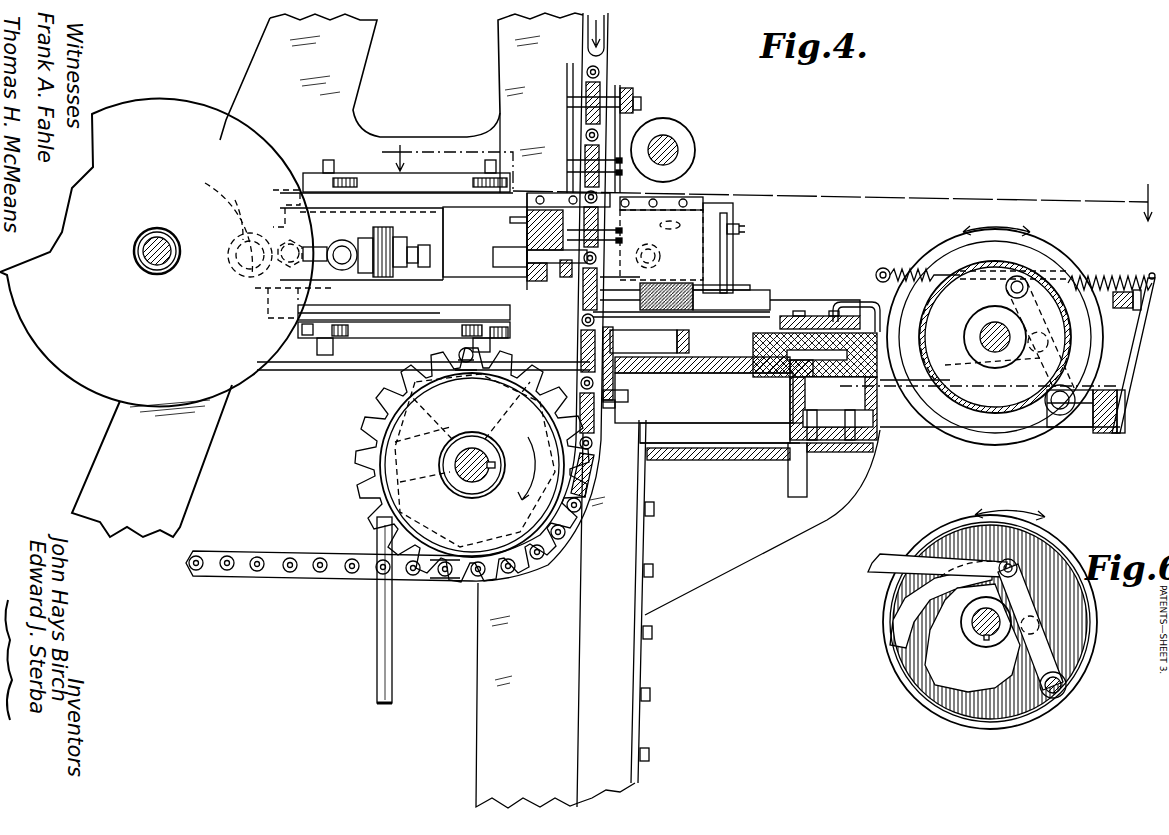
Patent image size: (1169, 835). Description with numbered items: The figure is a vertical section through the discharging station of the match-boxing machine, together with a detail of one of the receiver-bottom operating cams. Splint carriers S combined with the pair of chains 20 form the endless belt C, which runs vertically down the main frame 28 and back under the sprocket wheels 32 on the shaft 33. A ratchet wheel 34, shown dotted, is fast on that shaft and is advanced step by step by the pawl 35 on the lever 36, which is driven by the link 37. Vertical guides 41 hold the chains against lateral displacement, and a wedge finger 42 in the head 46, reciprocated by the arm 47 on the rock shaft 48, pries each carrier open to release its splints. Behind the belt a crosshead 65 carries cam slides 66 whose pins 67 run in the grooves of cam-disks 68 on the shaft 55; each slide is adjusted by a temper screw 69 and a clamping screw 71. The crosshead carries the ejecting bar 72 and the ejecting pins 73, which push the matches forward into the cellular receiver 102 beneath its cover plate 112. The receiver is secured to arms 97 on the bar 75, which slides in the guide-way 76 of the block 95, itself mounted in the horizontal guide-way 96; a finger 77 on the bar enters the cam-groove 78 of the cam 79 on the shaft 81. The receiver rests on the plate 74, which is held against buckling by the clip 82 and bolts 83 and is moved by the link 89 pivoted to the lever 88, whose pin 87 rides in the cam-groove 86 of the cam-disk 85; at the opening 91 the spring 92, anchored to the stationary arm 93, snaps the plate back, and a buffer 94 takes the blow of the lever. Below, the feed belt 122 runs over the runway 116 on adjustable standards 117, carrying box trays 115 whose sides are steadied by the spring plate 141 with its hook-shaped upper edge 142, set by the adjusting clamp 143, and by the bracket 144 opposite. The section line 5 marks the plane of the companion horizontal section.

In FIG. 4, the section line 5— 5 is at (647, 97).
In FIG. 4, the chains 20 is at (337, 571).
In FIG. 4, the main frame 28 is at (345, 63).
In FIG. 4, the sprocket wheels 32 is at (366, 490).
In FIG. 4, the shaft 33 is at (470, 477).
In FIG. 4, the ratchet wheel 34 is at (462, 560).
In FIG. 4, the pawl 35 is at (498, 356).
In FIG. 4, the lever 36 is at (388, 408).
In FIG. 4, the link 37 is at (378, 636).
In FIG. 4, the guides 41 is at (570, 83).
In FIG. 4, the wedge finger 42 is at (713, 198).
In FIG. 4, the head 46 is at (740, 193).
In FIG. 4, the arm 47 is at (690, 178).
In FIG. 4, the rock shaft 48 is at (668, 140).
In FIG. 4, the shaft 55 is at (157, 266).
In FIG. 4, the crosshead 65 is at (391, 239).
In FIG. 4, the cam slides 66 is at (322, 275).
In FIG. 4, the pin 67 is at (248, 272).
In FIG. 4, the cam-disk 68 is at (156, 317).
In FIG. 4, the temper screw 69 is at (412, 250).
In FIG. 4, the clamping screw 71 is at (343, 240).
In FIG. 4, the ejecting bar 72 is at (558, 212).
In FIG. 4, the ejecting pins 73 is at (524, 283).
In FIG. 4, the plate 74 is at (676, 323).
In FIG. 4, the bar 75 is at (828, 310).
In FIG. 4, the guide-way 76 is at (848, 325).
In FIG. 4, the finger 77 is at (843, 300).
In FIG. 4, the cam-groove 78 is at (1033, 268).
In FIG. 4, the cam 79 is at (1015, 250).
In FIG. 4, the shaft 81 is at (983, 334).
In FIG. 6, the shaft 81 is at (984, 639).
In FIG. 4, the clip 82 is at (790, 312).
In FIG. 4, the bolts 83 is at (725, 295).
In FIG. 6, the cam-disk 85 is at (893, 665).
In FIG. 6, the cam-groove 86 is at (938, 710).
In FIG. 6, the pin 87 is at (1040, 618).
In FIG. 4, the lever 88 is at (1092, 344).
In FIG. 6, the lever 88 is at (1020, 560).
In FIG. 4, the link 89 is at (900, 268).
In FIG. 6, the link 89 is at (895, 562).
In FIG. 6, the opening 91 is at (1090, 652).
In FIG. 4, the spring 92 is at (1075, 278).
In FIG. 4, the stationary arm 93 is at (1140, 318).
In FIG. 4, the buffer 94 is at (1120, 290).
In FIG. 4, the block 95 is at (781, 391).
In FIG. 4, the guide-way 96 is at (887, 384).
In FIG. 4, the arms 97 is at (778, 300).
In FIG. 4, the cellular receiver 102 is at (700, 286).
In FIG. 4, the cover plate 112 is at (678, 247).
In FIG. 4, the box trays 115 is at (643, 342).
In FIG. 4, the plate or runway 116 is at (663, 373).
In FIG. 4, the standards 117 is at (707, 416).
In FIG. 4, the feed belt 122 is at (702, 379).
In FIG. 4, the spring plate 141 is at (635, 392).
In FIG. 4, the hook-shaped upper edge 142 is at (621, 323).
In FIG. 4, the adjusting clamp 143 is at (613, 408).
In FIG. 4, the bracket 144 is at (690, 342).
In FIG. 4, the splint carrier S is at (590, 490).
In FIG. 4, the belt C is at (556, 352).